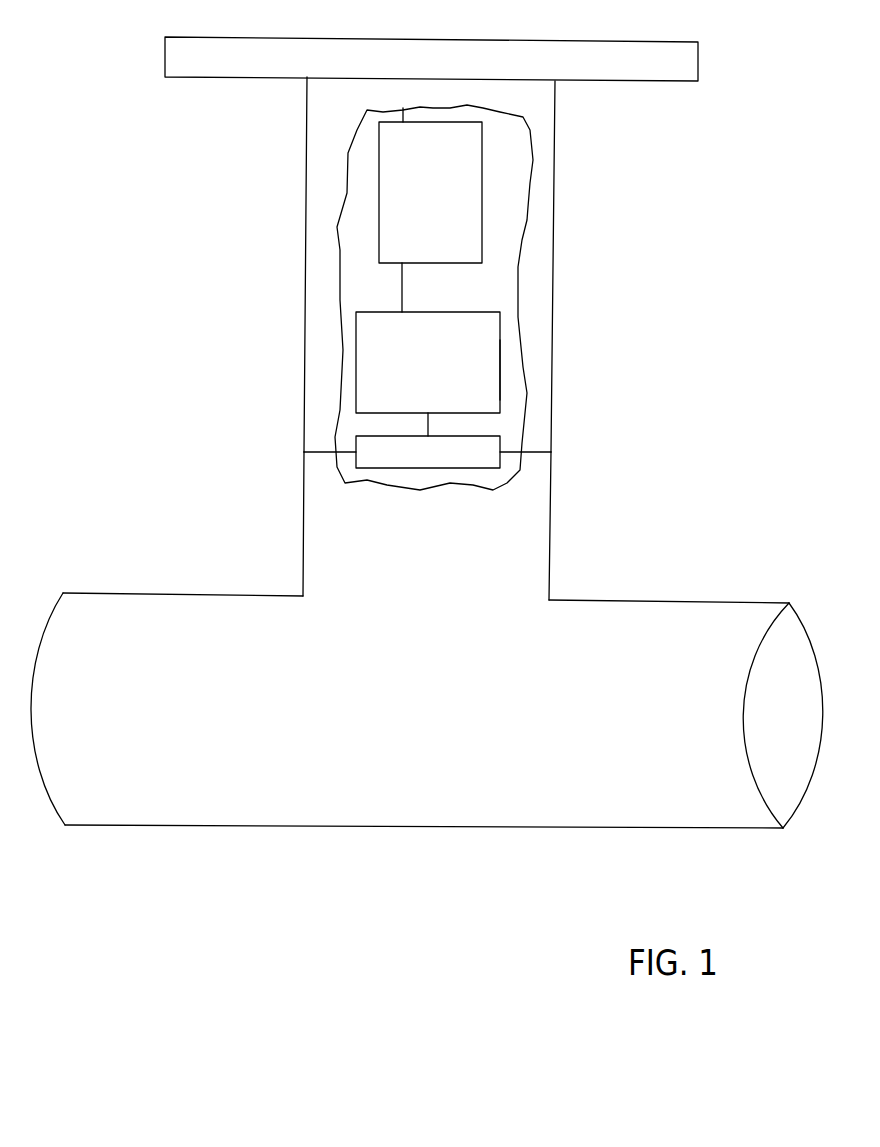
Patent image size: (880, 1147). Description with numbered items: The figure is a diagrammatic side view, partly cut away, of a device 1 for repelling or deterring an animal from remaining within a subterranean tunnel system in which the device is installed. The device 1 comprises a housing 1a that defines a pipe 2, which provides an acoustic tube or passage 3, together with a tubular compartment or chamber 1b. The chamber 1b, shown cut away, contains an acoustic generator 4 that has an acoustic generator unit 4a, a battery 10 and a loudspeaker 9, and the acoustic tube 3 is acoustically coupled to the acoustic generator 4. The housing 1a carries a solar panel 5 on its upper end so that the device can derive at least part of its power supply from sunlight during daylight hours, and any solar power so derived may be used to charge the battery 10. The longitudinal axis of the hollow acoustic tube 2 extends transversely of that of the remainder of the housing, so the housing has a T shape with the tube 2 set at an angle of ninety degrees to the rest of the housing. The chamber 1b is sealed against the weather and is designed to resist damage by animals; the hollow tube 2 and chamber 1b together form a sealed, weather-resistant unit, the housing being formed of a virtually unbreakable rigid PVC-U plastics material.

The device 1 is at (670, 238).
The housing 1a is at (550, 518).
The tubular compartment or chamber 1b is at (510, 202).
The pipe 2 is at (619, 602).
The acoustic tube or passage 3 is at (782, 673).
The acoustic generator 4 is at (488, 300).
The acoustic generator unit 4a is at (500, 367).
The solar panel 5 is at (575, 82).
The loudspeaker 9 is at (500, 442).
The battery 10 is at (482, 240).